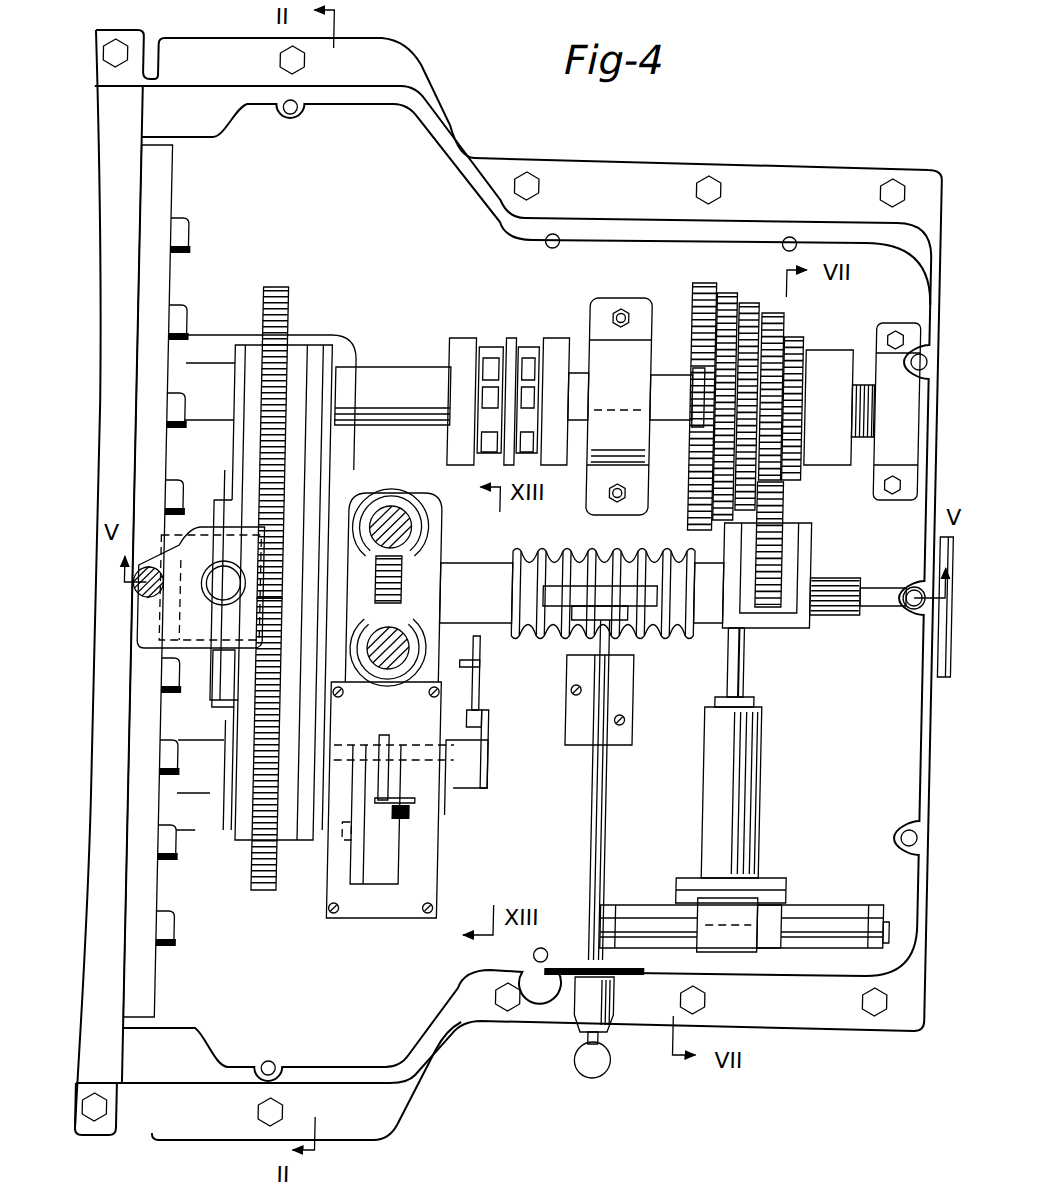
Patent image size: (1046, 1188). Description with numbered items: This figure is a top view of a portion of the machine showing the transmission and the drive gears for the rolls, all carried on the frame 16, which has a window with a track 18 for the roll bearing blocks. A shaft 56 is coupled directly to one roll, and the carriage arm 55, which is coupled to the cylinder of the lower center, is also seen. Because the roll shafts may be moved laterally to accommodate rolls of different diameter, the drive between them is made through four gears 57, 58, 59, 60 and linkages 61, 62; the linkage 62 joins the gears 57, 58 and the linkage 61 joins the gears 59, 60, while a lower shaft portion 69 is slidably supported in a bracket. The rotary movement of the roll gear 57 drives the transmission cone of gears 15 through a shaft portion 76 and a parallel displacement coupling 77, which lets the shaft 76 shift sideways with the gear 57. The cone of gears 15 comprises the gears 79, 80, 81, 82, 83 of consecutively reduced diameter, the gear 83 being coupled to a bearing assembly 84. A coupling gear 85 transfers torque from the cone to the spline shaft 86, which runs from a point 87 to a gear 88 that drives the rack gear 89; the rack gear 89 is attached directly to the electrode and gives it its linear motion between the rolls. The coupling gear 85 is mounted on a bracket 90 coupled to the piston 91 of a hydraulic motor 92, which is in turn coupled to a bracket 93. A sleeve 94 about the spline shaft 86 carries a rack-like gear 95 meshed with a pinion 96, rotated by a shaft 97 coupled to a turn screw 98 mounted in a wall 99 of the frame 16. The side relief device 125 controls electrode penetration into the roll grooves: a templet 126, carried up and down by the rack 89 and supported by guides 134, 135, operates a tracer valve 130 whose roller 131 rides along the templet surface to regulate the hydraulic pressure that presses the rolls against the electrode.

The gear train assembly 15 is at (752, 243).
The frame 16 is at (393, 45).
The track 18 is at (664, 385).
The carriage arm 55 is at (211, 378).
The shaft 56 is at (208, 800).
The roll gear 57 is at (284, 318).
The gear 58 is at (205, 587).
The gear 59 is at (255, 658).
The gear 60 is at (266, 890).
The linkage 61 is at (313, 840).
The linkage 62 is at (320, 452).
The lower shaft portion 69 is at (218, 573).
The shaft portion 76 is at (405, 376).
The parallel displacement coupling 77 is at (496, 345).
The gear 79 is at (686, 292).
The gear 80 is at (722, 298).
The gear 81 is at (744, 313).
The gear 82 is at (766, 318).
The gear 83 is at (788, 340).
The bearing assembly 84 is at (853, 382).
The coupling gear 85 is at (776, 516).
The spline shaft 86 is at (833, 585).
The point 87 is at (908, 611).
The gear 88 is at (414, 578).
The rack gear 89 is at (384, 642).
The bracket 90 is at (805, 541).
The piston 91 is at (746, 667).
The hydraulic motor 92 is at (749, 797).
The bracket 93 is at (795, 920).
The sleeve 94 is at (585, 562).
The rack-like gear 95 is at (527, 556).
The pinion 96 is at (641, 638).
The shaft 97 is at (611, 840).
The turn screw 98 is at (614, 1066).
The wall 99 is at (544, 969).
The side relief device 125 is at (510, 786).
The templet 126 is at (485, 680).
The tracer valve 130 is at (425, 780).
The roller 131 is at (488, 716).
The guide 134 is at (484, 664).
The guide 135 is at (457, 670).